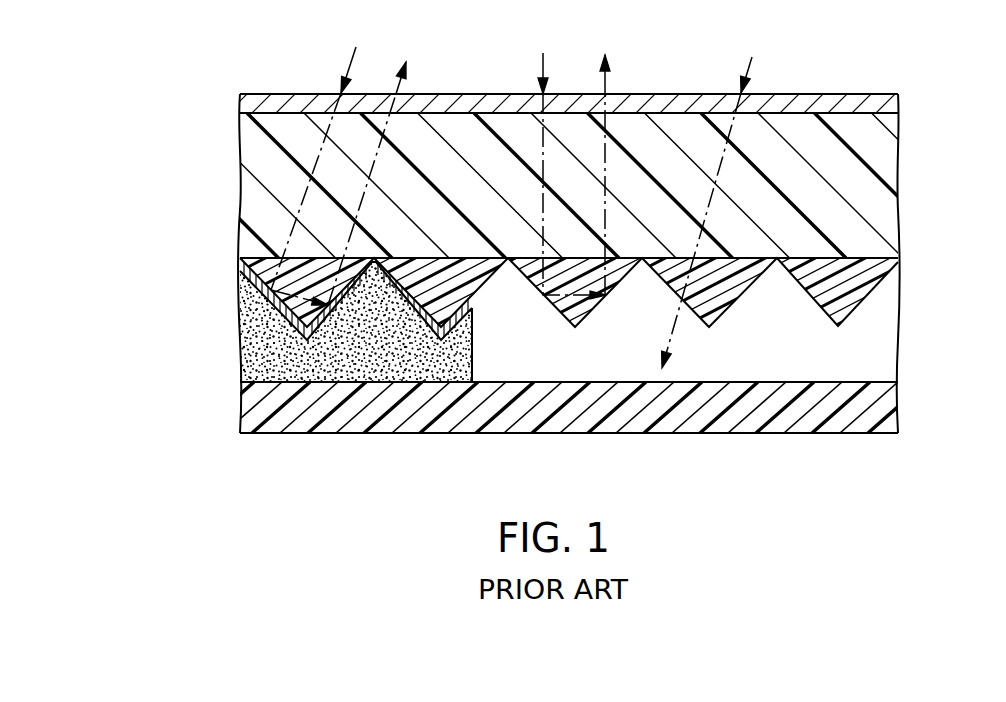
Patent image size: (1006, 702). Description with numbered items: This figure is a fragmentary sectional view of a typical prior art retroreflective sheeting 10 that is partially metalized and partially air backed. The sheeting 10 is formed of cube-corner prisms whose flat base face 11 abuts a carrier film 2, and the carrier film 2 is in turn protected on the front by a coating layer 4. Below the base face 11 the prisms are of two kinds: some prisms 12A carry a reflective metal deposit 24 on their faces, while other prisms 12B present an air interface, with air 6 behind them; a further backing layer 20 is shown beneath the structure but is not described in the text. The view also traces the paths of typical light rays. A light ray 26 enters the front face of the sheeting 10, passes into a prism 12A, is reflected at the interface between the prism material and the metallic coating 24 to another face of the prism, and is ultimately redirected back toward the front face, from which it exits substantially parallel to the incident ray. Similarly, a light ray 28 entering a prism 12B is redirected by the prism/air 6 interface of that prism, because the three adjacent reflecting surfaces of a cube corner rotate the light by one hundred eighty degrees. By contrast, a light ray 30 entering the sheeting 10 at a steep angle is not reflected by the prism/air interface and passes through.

The carrier film 2 is at (902, 140).
The coating layer 4 is at (902, 95).
The air 6 is at (877, 338).
The retroreflective sheeting 10 is at (915, 187).
The flat base face 11 is at (863, 257).
The metalized prisms 12A is at (290, 307).
The air-backed prisms 12B is at (569, 314).
The bottom substrate layer 20 is at (272, 363).
The reflective metal deposit 24 is at (240, 262).
The light ray 26 is at (342, 66).
The light ray 28 is at (548, 68).
The light ray 30 is at (752, 70).